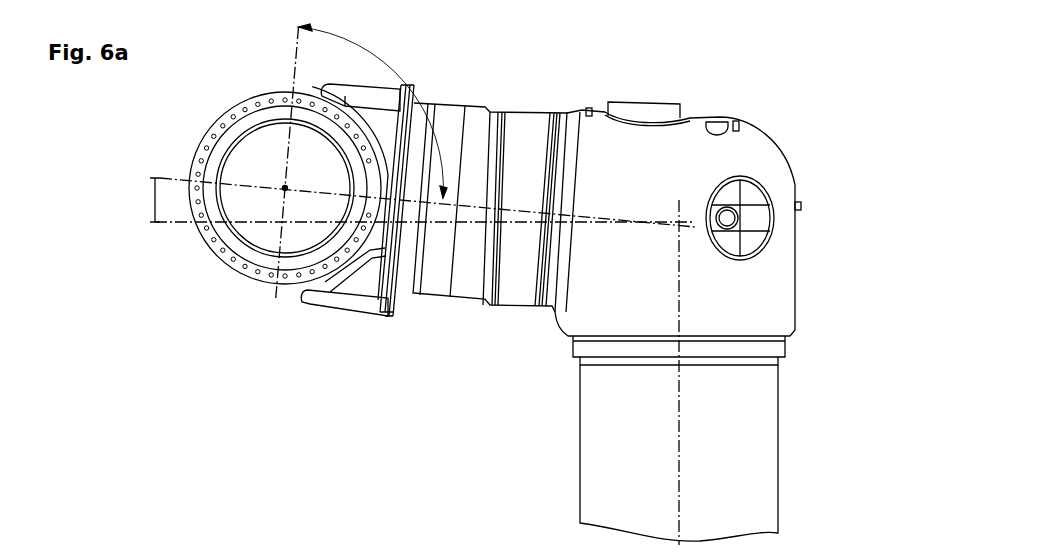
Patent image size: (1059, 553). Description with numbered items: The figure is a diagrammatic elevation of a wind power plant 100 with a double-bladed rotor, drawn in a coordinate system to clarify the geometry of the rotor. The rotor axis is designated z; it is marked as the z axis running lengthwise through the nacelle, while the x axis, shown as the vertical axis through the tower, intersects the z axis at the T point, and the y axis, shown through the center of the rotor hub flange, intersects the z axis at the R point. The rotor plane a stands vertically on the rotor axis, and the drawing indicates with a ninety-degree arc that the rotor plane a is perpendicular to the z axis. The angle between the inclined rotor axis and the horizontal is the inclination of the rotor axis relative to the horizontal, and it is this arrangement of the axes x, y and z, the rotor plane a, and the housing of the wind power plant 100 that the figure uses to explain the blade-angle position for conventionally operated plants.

The wind power plant 100 is at (485, 407).
The rotor plane a is at (300, 72).
The z axis (rotor axis) z is at (508, 205).
The x axis x is at (679, 474).
The y axis y is at (285, 188).